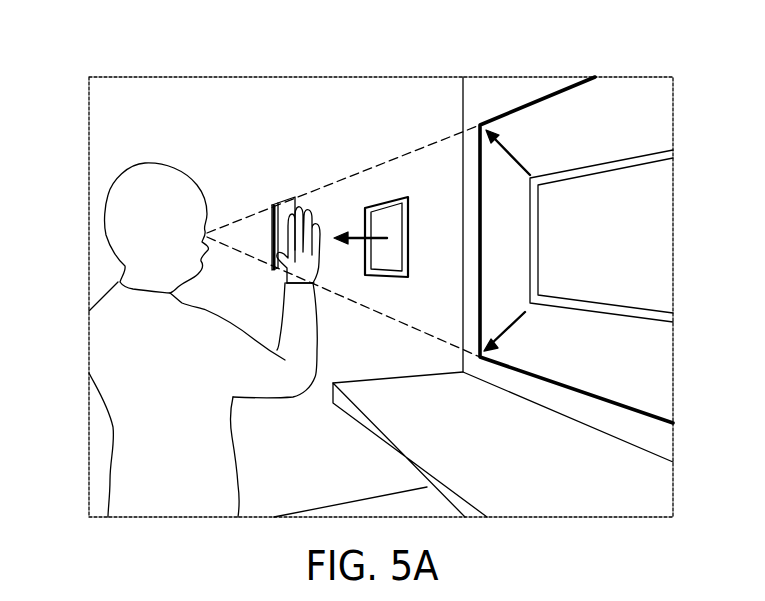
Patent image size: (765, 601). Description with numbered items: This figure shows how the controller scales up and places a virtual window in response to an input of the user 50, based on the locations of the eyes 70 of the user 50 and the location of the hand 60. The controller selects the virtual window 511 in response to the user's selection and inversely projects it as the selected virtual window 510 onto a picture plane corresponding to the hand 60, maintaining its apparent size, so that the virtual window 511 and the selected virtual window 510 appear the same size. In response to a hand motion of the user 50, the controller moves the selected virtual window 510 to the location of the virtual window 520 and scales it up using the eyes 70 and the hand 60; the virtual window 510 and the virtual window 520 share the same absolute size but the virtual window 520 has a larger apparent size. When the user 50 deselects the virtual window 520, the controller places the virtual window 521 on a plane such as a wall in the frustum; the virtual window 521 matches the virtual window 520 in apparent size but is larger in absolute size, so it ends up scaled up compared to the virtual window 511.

The user 50 is at (110, 183).
The hand 60 is at (297, 258).
The eyes 70 is at (209, 231).
The selected virtual window 510 is at (387, 200).
The virtual window 511 is at (640, 157).
The virtual window 520 is at (284, 196).
The virtual window 521 is at (533, 102).